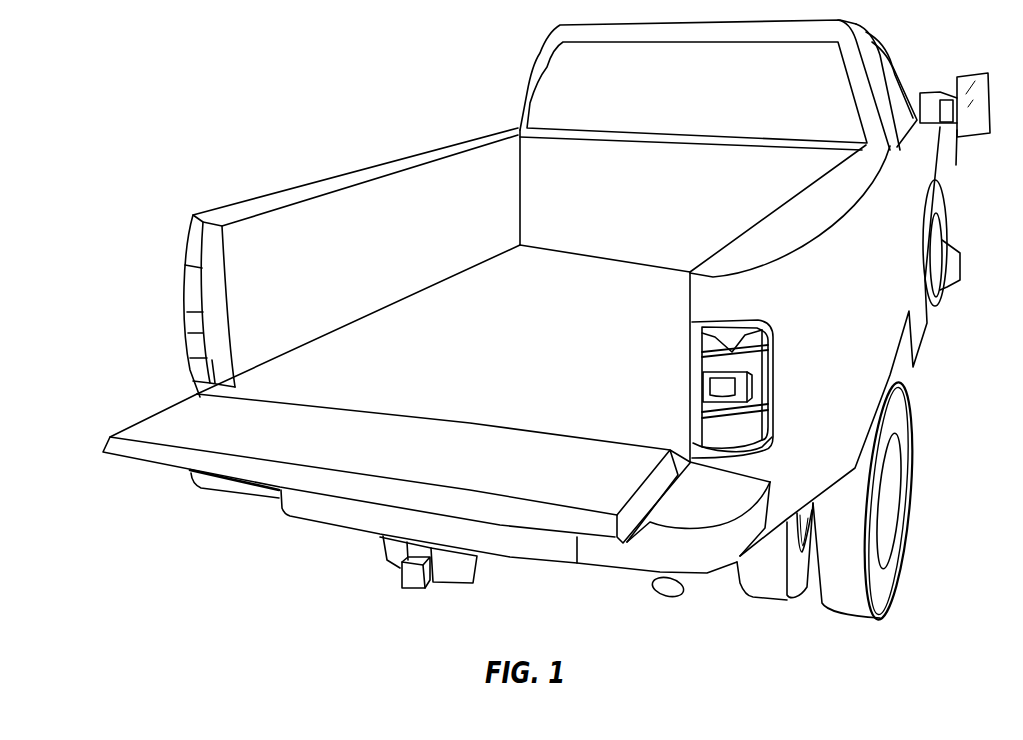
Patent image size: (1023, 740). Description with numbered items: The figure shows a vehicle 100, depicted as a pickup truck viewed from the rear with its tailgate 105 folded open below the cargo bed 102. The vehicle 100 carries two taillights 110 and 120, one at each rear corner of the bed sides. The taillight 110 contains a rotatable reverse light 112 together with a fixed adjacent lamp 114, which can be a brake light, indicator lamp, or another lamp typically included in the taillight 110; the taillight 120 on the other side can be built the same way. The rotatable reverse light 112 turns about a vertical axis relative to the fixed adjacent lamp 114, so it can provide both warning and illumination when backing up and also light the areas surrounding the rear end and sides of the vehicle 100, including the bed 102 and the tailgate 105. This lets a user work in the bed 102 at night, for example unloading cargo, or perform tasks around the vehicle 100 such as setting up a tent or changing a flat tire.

The vehicle 100 is at (546, 320).
The bed 102 is at (513, 305).
The tailgate 105 is at (173, 463).
The taillight 110 is at (731, 381).
The rotatable reverse light 112 is at (738, 390).
The fixed adjacent lamp 114 is at (743, 363).
The taillight 120 is at (178, 284).